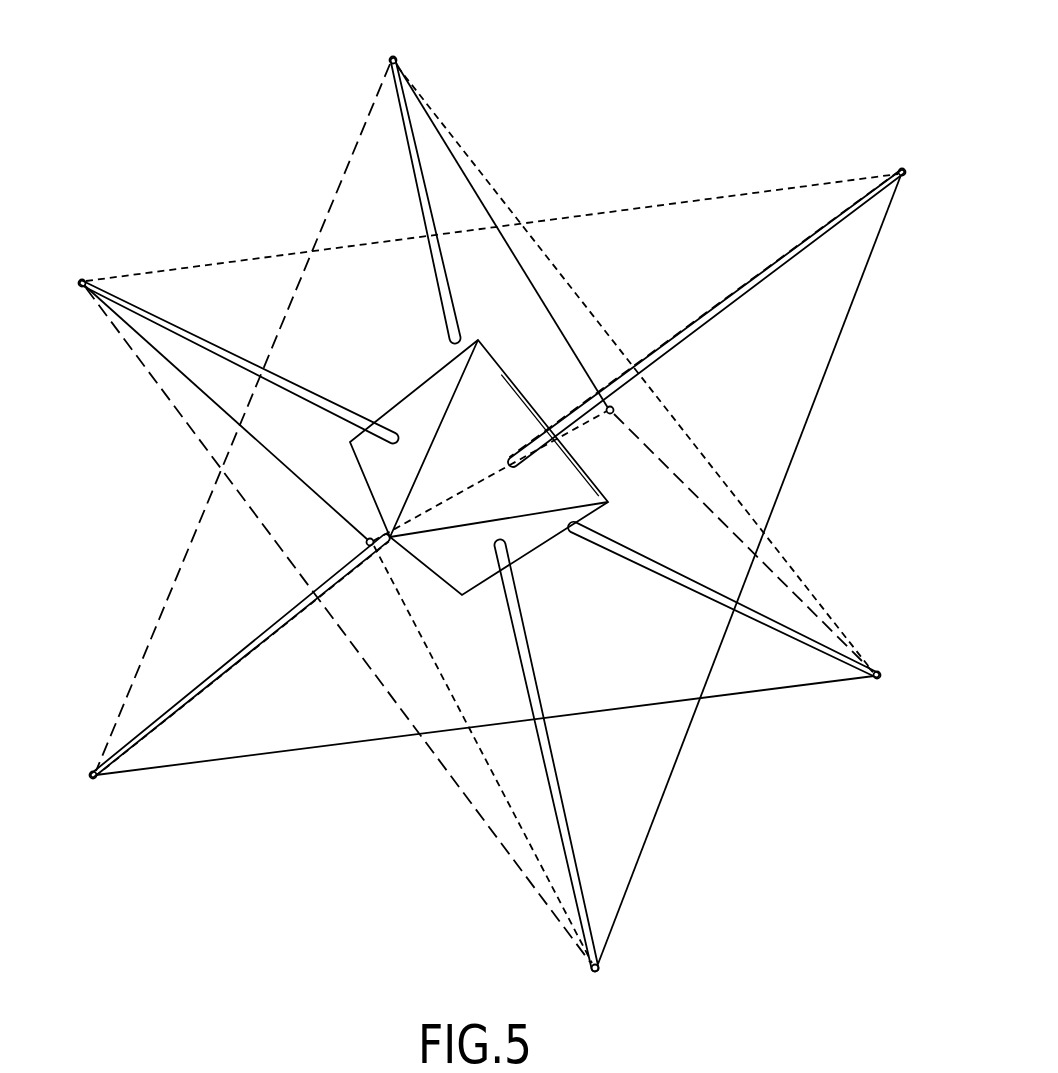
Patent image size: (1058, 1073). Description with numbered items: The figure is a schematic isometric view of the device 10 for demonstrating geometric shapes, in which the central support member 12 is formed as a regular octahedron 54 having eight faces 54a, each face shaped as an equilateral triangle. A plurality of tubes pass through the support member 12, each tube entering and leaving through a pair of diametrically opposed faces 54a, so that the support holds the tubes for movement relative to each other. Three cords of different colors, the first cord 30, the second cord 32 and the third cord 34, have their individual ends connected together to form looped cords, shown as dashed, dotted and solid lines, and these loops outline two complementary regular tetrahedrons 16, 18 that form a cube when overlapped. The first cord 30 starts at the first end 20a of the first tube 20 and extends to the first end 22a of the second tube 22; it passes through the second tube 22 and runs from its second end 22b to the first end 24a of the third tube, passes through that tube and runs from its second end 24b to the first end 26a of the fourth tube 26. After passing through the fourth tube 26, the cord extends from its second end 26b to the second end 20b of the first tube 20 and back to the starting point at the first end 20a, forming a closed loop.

The device for demonstrating geometric shapes 10 is at (567, 168).
The central support member 12 is at (388, 375).
The regular tetrahedron 16 is at (768, 697).
The regular tetrahedron 18 is at (660, 824).
The first tube 20 is at (747, 293).
The first end of first tube 20a is at (905, 154).
The second end of first tube 20b is at (235, 678).
The second tube 22 is at (170, 318).
The first end of second tube 22a is at (101, 262).
The second end of second tube 22b is at (740, 621).
The first end of third tube 24a is at (421, 181).
The second end of third tube 24b is at (563, 777).
The fourth tube 26 is at (582, 432).
The first end of fourth tube 26a is at (366, 546).
The second end of fourth tube 26b is at (622, 413).
The first cord 30 is at (793, 567).
The second cord 32 is at (810, 415).
The third cord 34 is at (445, 765).
The regular octahedron 54 is at (489, 398).
The faces of octahedron 54a is at (407, 484).